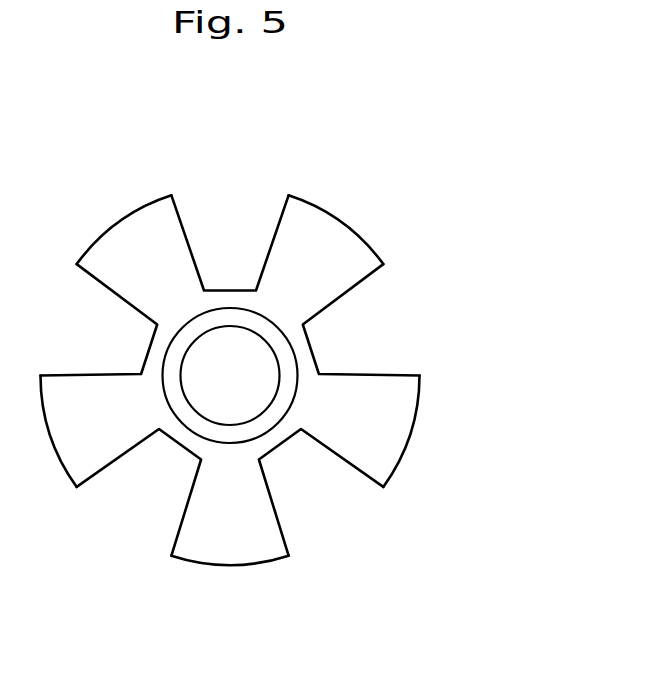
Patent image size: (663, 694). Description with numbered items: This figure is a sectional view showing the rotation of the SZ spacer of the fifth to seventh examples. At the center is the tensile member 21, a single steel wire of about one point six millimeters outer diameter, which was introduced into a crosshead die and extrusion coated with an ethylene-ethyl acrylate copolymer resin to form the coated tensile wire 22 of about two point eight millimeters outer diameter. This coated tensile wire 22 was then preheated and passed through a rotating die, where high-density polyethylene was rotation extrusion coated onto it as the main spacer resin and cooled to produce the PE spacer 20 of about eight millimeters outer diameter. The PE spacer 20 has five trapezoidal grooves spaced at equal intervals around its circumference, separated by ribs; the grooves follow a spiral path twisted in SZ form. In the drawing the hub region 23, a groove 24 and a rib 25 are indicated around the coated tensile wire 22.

The PE spacer 20 is at (277, 347).
The tensile member 21 is at (243, 350).
The coated tensile wire 22 is at (283, 375).
The hub outer periphery 23 is at (230, 307).
The slot 24 is at (202, 220).
The salient pole 25 is at (333, 213).